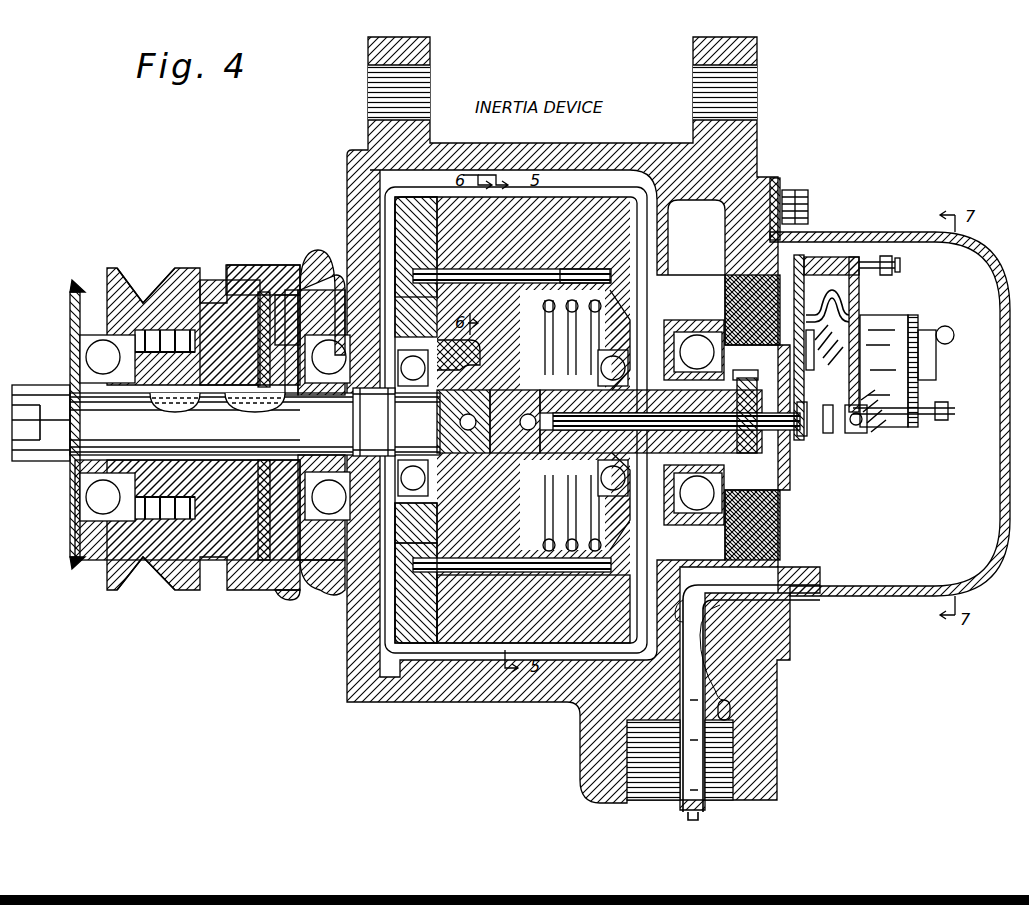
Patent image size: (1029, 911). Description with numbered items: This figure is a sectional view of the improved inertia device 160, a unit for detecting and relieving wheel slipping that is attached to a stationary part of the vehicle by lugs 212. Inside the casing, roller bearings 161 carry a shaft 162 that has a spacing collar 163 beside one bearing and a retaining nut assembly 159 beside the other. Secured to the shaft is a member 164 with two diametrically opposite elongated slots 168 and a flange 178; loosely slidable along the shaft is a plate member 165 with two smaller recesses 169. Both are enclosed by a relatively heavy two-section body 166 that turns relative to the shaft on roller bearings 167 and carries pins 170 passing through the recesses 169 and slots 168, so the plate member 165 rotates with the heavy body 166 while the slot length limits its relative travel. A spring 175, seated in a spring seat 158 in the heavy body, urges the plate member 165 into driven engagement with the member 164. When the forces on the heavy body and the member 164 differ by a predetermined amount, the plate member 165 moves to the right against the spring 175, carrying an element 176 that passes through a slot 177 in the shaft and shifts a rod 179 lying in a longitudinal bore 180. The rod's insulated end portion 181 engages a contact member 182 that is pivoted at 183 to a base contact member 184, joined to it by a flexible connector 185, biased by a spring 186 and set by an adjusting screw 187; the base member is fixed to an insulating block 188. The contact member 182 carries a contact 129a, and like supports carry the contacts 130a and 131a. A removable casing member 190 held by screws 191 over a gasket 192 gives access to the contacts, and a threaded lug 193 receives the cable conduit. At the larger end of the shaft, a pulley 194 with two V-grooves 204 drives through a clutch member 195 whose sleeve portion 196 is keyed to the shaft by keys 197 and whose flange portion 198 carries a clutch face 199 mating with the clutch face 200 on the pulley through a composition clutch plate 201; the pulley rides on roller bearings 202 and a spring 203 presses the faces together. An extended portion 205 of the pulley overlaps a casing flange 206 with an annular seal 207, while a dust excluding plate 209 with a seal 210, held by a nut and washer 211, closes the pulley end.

The contact 129a is at (805, 438).
The contact 130a is at (832, 435).
The contact 131a is at (860, 436).
The spring seat 158 is at (622, 530).
The retaining nut assembly 159 is at (742, 370).
The inertia device 160 is at (772, 149).
The roller bearings 161 is at (697, 330).
The shaft 162 is at (262, 445).
The spacing collar 163 is at (355, 427).
The member 164 is at (440, 512).
The plate member 165 is at (533, 609).
The heavy body 166 is at (598, 190).
The roller bearings 167 is at (413, 355).
The elongated slots 168 is at (432, 300).
The recesses 169 is at (535, 262).
The pins 170 is at (572, 270).
The spring 175 is at (590, 300).
The element 176 is at (500, 443).
The slot 177 is at (478, 420).
The flange 178 is at (488, 355).
The rod 179 is at (648, 400).
The bore 180 is at (668, 435).
The end portion 181 is at (758, 390).
The contact member 182 is at (812, 370).
The pivot 183 is at (805, 260).
The base contact member 184 is at (860, 295).
The flexible connector 185 is at (848, 310).
The spring 186 is at (855, 373).
The adjusting screw 187 is at (896, 262).
The insulating block 188 is at (740, 278).
The removable casing member 190 is at (1000, 570).
The screws 191 is at (806, 194).
The gasket 192 is at (780, 180).
The threaded lug 193 is at (777, 710).
The pulley 194 is at (245, 262).
The clutch member 195 is at (278, 292).
The sleeve portion 196 is at (183, 370).
The keys 197 is at (255, 424).
The flange portion 198 is at (262, 300).
The clutch face 199 is at (303, 342).
The clutch face 200 is at (240, 285).
The composition clutch plate 201 is at (253, 370).
The roller bearings 202 is at (110, 275).
The spring 203 is at (150, 330).
The V-grooves 204 is at (182, 290).
The extended portion 205 is at (312, 250).
The flange 206 is at (335, 572).
The annular seal 207 is at (290, 592).
The dust excluding plate 209 is at (70, 320).
The seal 210 is at (75, 283).
The nut and washer 211 is at (42, 385).
The lugs 212 is at (430, 50).